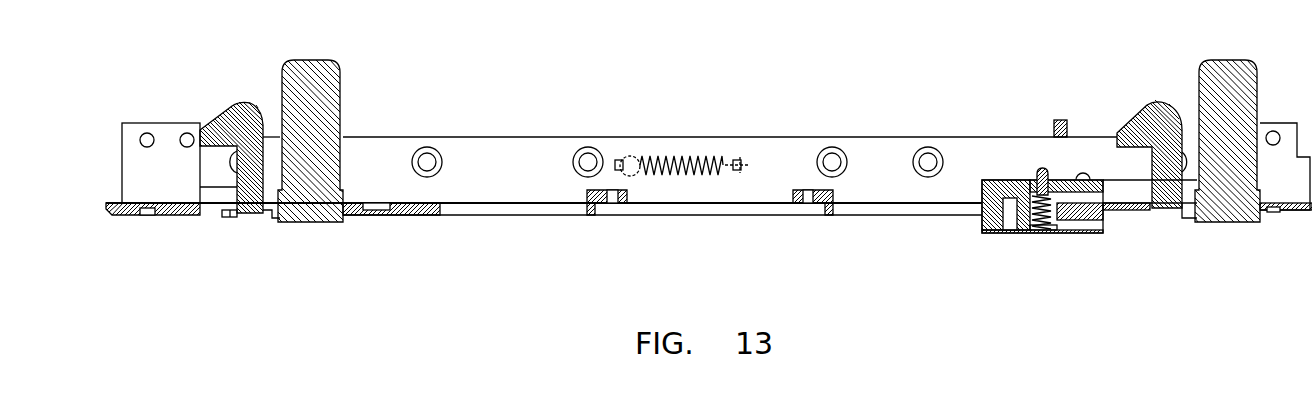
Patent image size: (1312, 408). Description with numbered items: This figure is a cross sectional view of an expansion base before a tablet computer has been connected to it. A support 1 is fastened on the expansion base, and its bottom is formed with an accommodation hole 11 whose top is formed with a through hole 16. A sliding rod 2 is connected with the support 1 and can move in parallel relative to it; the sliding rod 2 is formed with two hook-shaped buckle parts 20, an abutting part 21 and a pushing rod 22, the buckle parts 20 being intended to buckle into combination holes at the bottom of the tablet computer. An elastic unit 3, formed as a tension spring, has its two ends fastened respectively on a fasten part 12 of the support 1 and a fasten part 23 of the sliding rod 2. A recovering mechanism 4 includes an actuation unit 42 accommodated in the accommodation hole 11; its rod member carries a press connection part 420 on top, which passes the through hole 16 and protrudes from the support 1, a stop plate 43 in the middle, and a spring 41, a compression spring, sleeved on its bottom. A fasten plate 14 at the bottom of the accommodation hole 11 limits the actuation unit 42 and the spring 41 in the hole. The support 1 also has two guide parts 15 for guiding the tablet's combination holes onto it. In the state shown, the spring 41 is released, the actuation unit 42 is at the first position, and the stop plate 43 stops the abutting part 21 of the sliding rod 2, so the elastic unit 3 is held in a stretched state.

The support 1 is at (1030, 195).
The sliding rod 2 is at (1180, 215).
The elastic unit 3 is at (679, 158).
The recovering mechanism 4 is at (1071, 228).
The accommodation hole 11 is at (1078, 222).
The fasten part 12 is at (622, 158).
The fasten plate 14 is at (990, 234).
The guide part 15 is at (320, 82).
The through hole 16 is at (1003, 185).
The hook-shaped buckle part 20 is at (226, 112).
The abutting part 21 is at (1132, 212).
The pushing rod 22 is at (1060, 120).
The fasten part 23 is at (743, 160).
The spring 41 is at (1038, 232).
The actuation unit 42 is at (1043, 233).
The stop plate 43 is at (1098, 218).
The press connection part 420 is at (1040, 168).